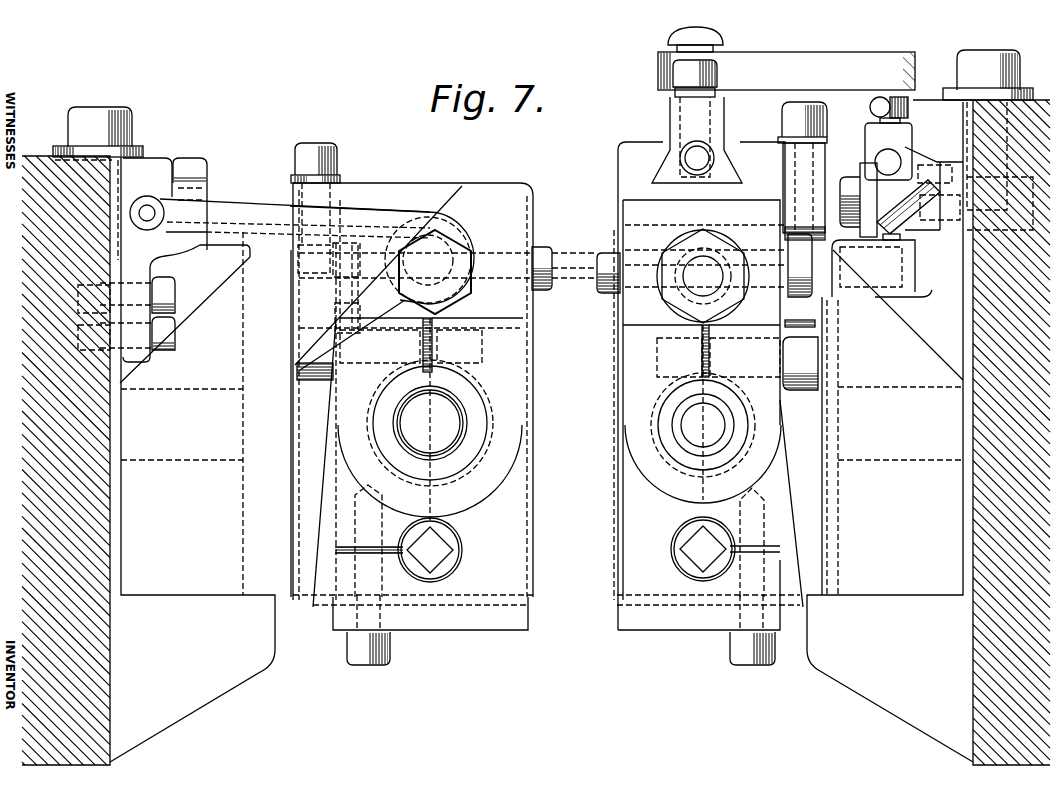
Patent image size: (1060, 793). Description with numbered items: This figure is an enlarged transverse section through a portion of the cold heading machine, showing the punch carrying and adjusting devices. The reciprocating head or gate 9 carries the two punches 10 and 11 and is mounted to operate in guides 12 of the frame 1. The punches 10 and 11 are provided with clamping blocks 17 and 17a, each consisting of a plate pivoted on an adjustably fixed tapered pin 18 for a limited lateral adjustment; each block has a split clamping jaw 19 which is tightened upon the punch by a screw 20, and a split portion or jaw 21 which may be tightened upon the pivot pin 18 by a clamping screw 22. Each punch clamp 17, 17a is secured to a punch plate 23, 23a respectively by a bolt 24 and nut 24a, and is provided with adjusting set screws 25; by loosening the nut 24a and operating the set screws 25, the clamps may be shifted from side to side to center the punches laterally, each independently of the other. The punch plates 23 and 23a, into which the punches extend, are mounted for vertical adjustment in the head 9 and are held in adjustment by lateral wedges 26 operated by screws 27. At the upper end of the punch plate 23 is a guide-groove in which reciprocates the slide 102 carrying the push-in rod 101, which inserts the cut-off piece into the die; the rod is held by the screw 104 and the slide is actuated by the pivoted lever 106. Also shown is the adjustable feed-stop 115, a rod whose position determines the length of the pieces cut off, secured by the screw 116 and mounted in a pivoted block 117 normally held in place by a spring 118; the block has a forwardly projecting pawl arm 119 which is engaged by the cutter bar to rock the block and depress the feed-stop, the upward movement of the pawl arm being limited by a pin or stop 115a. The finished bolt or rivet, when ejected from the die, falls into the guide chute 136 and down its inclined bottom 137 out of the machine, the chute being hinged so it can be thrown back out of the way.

The frame 1 is at (40, 455).
The reciprocating head or gate 9 is at (541, 413).
The punch 10 is at (703, 412).
The punch 11 is at (430, 419).
The guides 12 is at (164, 303).
The clamping block 17 is at (708, 386).
The clamping block 17a is at (412, 406).
The tapered pin 18 is at (453, 552).
The split clamping jaw 19 is at (550, 372).
The screw 20 is at (322, 372).
The split portion or jaw 21 is at (340, 612).
The clamping screw 22 is at (362, 657).
The punch plate 23 is at (772, 183).
The punch plate 23a is at (403, 194).
The bolt 24 is at (700, 268).
The nut 24a is at (690, 262).
The adjusting set screws 25 is at (550, 280).
The lateral wedges 26 is at (305, 437).
The screws 27 is at (338, 162).
The push-in rod 101 is at (714, 157).
The slide 102 is at (712, 134).
The screw 104 is at (708, 73).
The lever 106 is at (786, 58).
The feed-stop 115 is at (878, 157).
The plate 115a is at (934, 180).
The screw 116 is at (872, 104).
The pivoted block 117 is at (876, 180).
The spring 118 is at (900, 240).
The pawl arm 119 is at (918, 210).
The guide chute 136 is at (360, 240).
The inclined bottom 137 is at (149, 206).